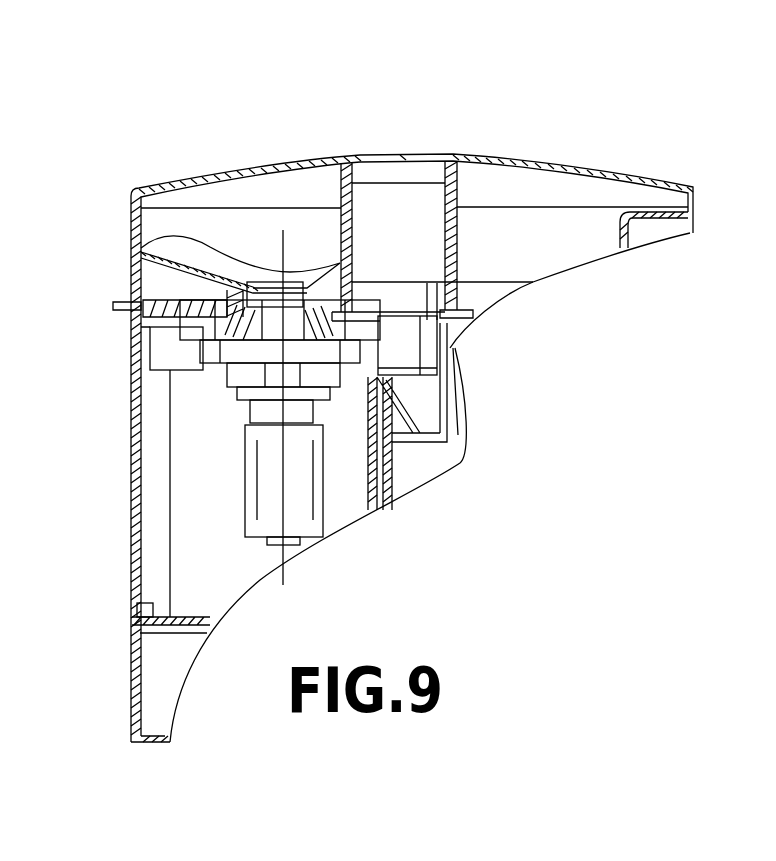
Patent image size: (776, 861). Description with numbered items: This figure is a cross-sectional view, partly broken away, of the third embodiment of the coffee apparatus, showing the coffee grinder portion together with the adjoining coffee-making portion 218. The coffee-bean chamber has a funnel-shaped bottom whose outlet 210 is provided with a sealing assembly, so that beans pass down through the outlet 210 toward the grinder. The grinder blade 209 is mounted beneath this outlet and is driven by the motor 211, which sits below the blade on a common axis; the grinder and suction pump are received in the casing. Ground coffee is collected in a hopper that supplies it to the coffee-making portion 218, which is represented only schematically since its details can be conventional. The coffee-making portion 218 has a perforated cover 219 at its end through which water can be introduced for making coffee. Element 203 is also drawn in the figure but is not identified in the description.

The end cap 219 is at (638, 180).
The housing front wall 218 is at (437, 465).
The bearing block 203 is at (450, 343).
The fan shroud 210 is at (200, 297).
The mounting flange 209 is at (190, 305).
The motor 211 is at (267, 462).